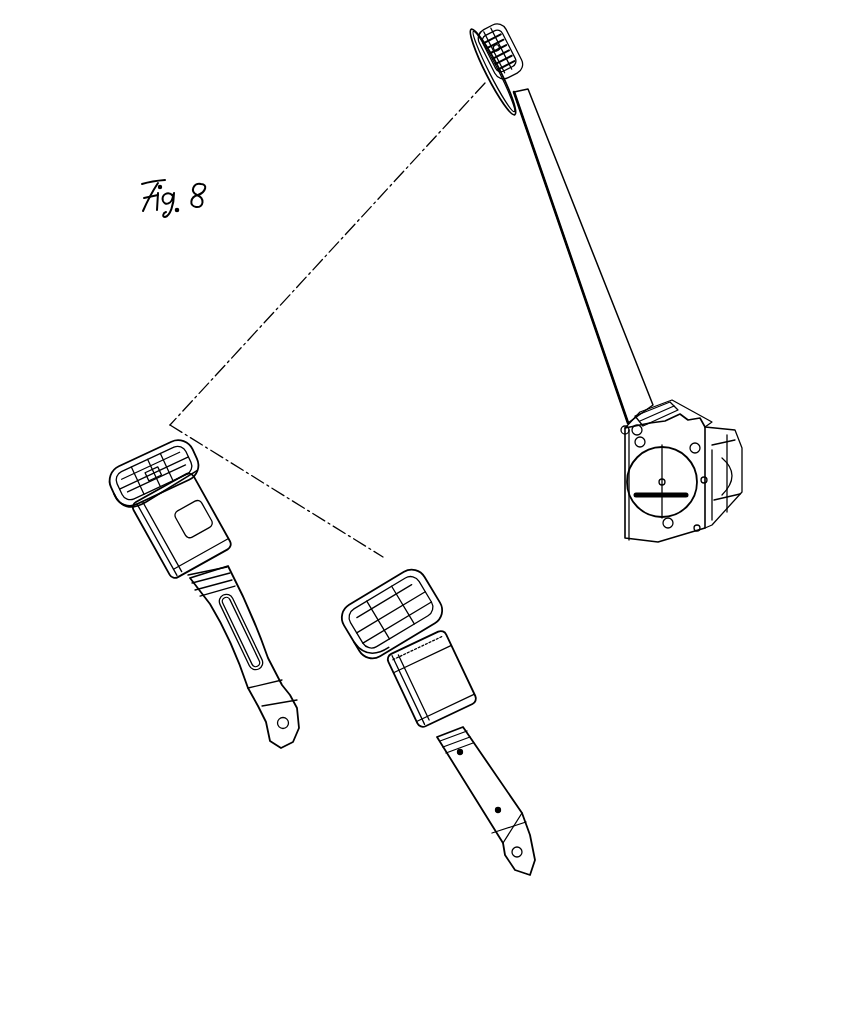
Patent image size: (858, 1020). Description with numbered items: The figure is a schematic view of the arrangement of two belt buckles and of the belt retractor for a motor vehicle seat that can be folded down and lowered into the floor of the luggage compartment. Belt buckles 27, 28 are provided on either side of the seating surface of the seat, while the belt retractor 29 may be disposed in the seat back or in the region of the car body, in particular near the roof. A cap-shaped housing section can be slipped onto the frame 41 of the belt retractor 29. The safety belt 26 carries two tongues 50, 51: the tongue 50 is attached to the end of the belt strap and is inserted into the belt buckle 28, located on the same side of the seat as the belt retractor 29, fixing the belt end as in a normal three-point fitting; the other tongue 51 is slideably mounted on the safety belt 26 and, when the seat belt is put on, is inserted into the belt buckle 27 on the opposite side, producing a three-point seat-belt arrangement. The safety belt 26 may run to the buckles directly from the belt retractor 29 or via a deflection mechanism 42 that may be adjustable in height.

The safety belt 26 is at (600, 197).
The belt buckle 27 is at (167, 591).
The belt buckle 28 is at (441, 719).
The belt retractor 29 is at (726, 474).
The frame 41 is at (695, 518).
The deflection mechanism 42 is at (570, 70).
The tongue 50 is at (420, 603).
The tongue 51 is at (77, 453).